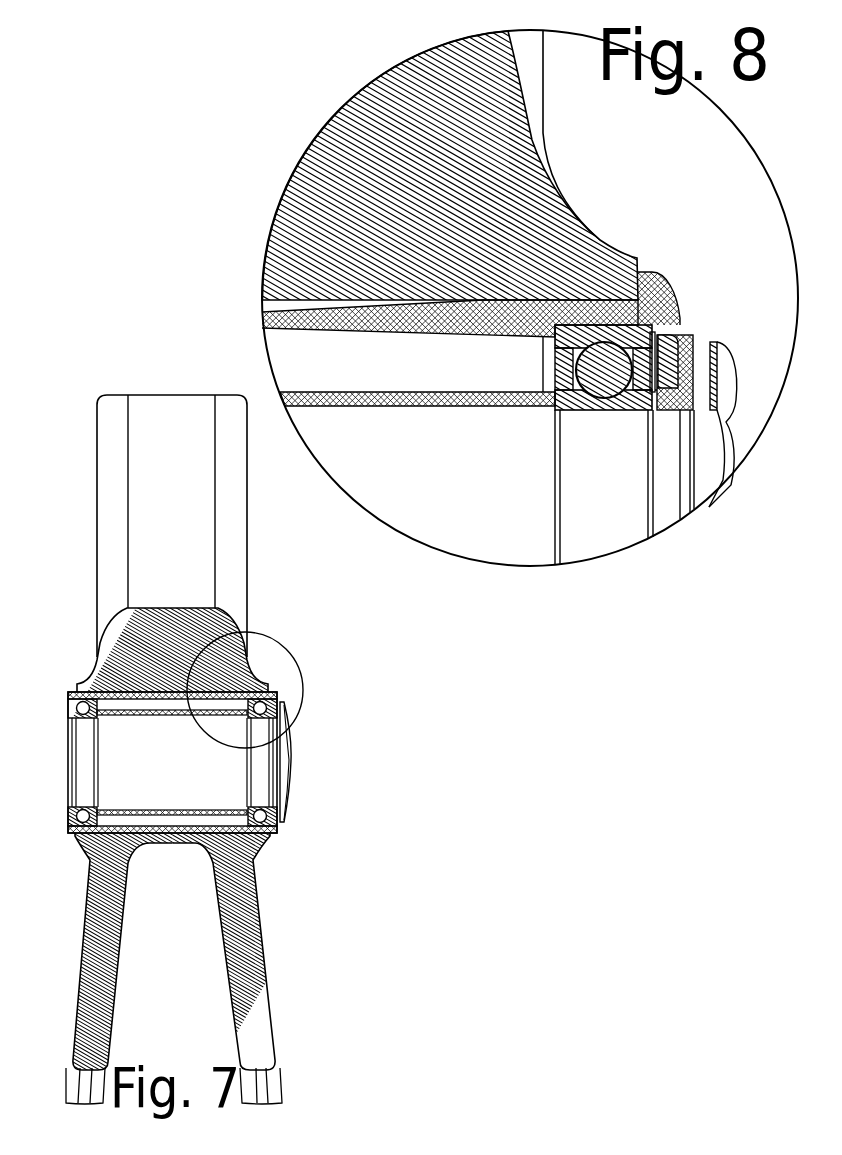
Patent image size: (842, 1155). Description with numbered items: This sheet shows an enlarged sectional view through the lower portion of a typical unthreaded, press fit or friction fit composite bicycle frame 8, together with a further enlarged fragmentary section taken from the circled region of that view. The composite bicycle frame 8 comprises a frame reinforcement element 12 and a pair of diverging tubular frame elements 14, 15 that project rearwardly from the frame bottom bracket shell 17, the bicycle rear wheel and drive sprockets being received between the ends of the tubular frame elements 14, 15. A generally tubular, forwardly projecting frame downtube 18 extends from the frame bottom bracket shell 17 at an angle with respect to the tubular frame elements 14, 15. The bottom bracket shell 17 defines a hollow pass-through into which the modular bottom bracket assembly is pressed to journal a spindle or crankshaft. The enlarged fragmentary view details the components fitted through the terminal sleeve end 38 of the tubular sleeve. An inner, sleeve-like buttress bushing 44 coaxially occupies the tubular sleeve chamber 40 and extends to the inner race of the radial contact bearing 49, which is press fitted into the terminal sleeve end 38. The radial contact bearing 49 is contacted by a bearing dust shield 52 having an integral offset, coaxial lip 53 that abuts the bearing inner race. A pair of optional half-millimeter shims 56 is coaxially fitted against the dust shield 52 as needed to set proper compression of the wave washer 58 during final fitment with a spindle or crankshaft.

In FIG. 7, the composite bicycle frame 8 is at (300, 715).
In FIG. 7, the frame reinforcement element 12 is at (224, 775).
In FIG. 7, the tubular frame element 14 is at (262, 945).
In FIG. 7, the tubular frame element 15 is at (102, 972).
In FIG. 8, the frame bottom bracket shell 17 is at (347, 118).
In FIG. 7, the frame bottom bracket shell 17 is at (172, 650).
In FIG. 8, the frame downtube 18 is at (571, 135).
In FIG. 7, the frame downtube 18 is at (112, 540).
In FIG. 8, the terminal sleeve end 38 is at (652, 273).
In FIG. 8, the tubular sleeve chamber 40 is at (424, 364).
In FIG. 8, the buttress bushing 44 is at (415, 405).
In FIG. 7, the buttress bushing 44 is at (123, 713).
In FIG. 8, the radial contact bearing 49 is at (598, 410).
In FIG. 7, the radial contact bearing 49 is at (224, 835).
In FIG. 8, the bearing dust shield 52 is at (682, 340).
In FIG. 8, the coaxial lip 53 is at (653, 410).
In FIG. 8, the shims 56 is at (677, 410).
In FIG. 8, the wave washer 58 is at (722, 372).
In FIG. 7, the wave washer 58 is at (285, 762).